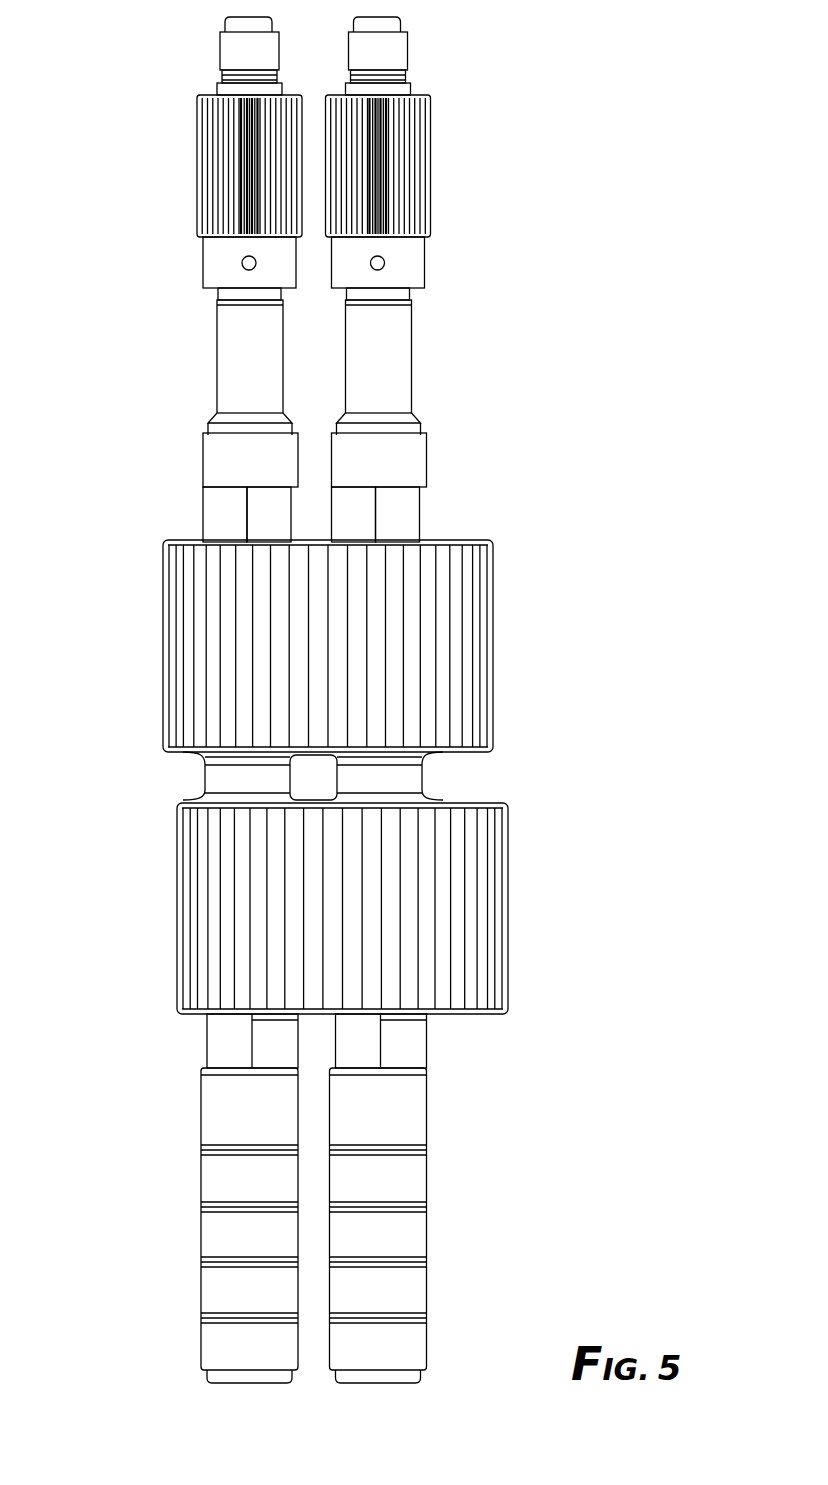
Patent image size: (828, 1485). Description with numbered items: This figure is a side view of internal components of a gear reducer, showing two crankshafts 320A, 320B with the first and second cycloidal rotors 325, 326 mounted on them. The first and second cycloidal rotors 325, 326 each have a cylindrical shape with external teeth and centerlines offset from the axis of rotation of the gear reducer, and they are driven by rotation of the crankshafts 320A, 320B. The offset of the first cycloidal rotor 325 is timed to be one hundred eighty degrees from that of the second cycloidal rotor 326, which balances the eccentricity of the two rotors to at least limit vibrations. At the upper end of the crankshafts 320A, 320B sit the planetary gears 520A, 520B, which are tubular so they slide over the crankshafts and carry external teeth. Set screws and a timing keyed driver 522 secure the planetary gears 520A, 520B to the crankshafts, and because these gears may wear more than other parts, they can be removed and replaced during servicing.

The planetary gear 520A is at (432, 145).
The planetary gear 520B is at (197, 135).
The timing keyed driver 522 is at (384, 262).
The crankshaft 320A is at (446, 350).
The crankshaft 320B is at (181, 368).
The first cycloidal rotor 325 is at (163, 607).
The second cycloidal rotor 326 is at (177, 872).